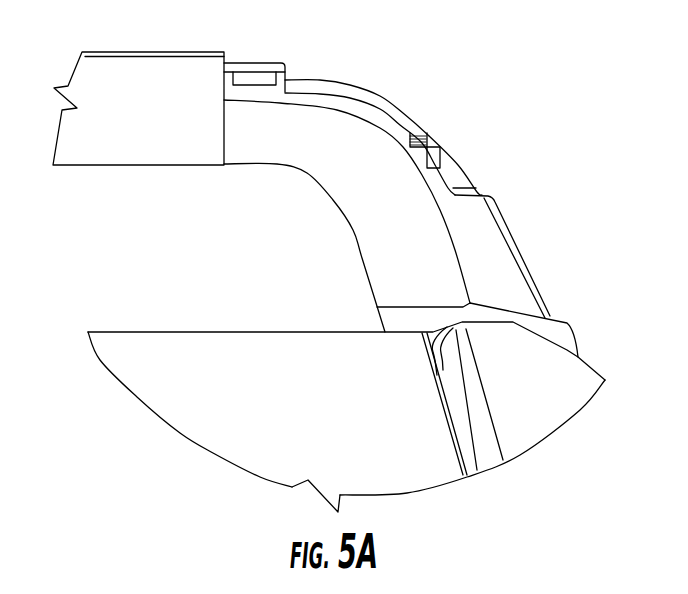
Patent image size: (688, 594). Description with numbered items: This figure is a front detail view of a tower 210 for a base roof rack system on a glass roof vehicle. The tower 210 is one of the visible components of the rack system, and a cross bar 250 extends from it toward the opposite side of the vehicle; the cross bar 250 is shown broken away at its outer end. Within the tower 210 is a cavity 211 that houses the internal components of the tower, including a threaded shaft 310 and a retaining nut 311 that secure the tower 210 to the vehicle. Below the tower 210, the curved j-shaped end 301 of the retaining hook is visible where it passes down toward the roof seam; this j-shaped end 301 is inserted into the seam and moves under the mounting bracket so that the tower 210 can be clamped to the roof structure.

The tower 210 is at (352, 229).
The cavity 211 is at (349, 96).
The cross bar 250 is at (135, 52).
The j-shaped end 301 is at (440, 350).
The threaded shaft 310 is at (428, 137).
The retaining nut 311 is at (425, 154).